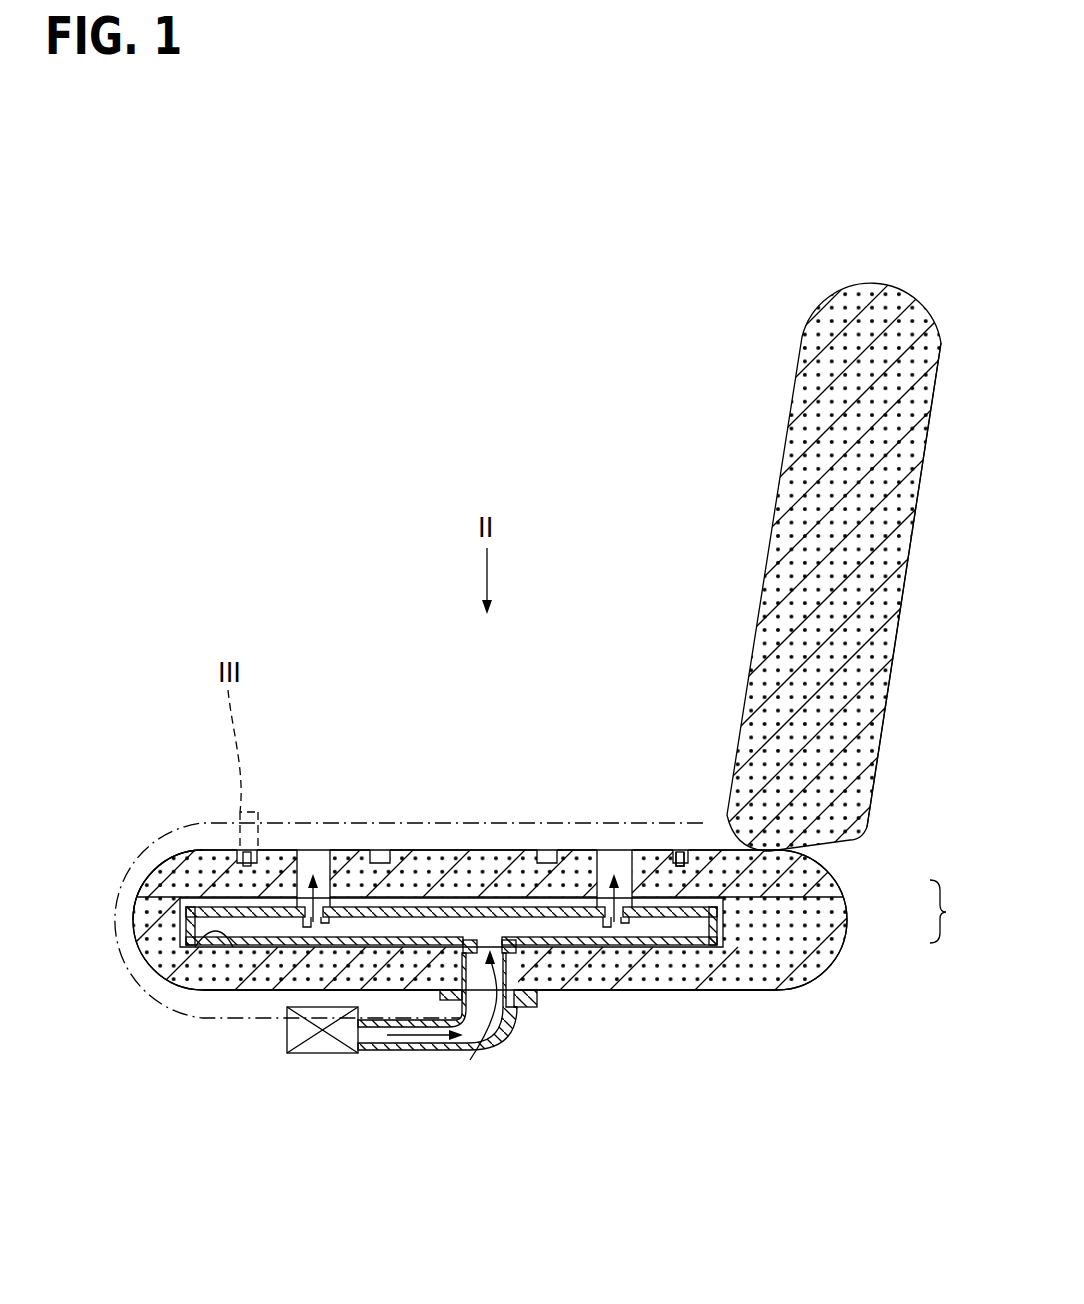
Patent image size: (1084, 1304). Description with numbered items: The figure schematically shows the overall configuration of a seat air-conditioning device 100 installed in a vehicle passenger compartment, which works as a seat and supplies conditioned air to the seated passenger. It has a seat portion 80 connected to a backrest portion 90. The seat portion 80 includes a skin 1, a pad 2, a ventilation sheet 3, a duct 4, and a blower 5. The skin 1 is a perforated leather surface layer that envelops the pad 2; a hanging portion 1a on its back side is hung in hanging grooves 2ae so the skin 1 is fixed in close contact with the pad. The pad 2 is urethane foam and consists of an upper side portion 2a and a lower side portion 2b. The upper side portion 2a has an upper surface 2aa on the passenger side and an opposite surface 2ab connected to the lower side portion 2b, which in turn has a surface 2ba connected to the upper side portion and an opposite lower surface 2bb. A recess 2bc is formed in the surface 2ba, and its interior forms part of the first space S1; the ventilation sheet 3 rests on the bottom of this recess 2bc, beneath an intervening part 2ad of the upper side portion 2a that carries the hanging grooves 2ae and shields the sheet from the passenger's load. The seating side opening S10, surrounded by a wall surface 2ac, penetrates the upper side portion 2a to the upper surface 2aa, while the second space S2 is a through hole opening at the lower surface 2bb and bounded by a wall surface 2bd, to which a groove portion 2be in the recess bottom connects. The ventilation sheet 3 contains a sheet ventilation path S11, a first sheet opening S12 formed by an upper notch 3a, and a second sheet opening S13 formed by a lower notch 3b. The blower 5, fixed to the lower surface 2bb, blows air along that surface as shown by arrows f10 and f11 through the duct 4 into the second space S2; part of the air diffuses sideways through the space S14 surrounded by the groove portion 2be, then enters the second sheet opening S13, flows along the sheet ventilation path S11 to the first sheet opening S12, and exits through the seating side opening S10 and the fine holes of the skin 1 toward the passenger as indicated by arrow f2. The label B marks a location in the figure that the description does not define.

The seat air-conditioning device 100 is at (888, 268).
The backrest portion 90 is at (906, 577).
The seat portion 80 is at (695, 996).
The skin 1 is at (140, 852).
The hanging portion 1a is at (680, 850).
The pad 2 is at (548, 920).
The upper side portion 2a is at (845, 888).
The upper surface 2aa is at (180, 865).
The surface 2ab is at (835, 952).
The wall surface 2ac is at (323, 867).
The intervening part 2ad is at (352, 903).
The hanging groove 2ae is at (240, 850).
The lower side portion 2b is at (845, 920).
The surface 2ba is at (815, 876).
The surface 2bb is at (758, 992).
The recess 2bc is at (233, 947).
The wall surface 2bd is at (518, 1040).
The groove portion 2be is at (468, 940).
The ventilation sheet 3 is at (198, 905).
The notch 3a is at (268, 868).
The notch 3b is at (527, 1004).
The duct 4 is at (440, 1050).
The blower 5 is at (322, 1053).
The boundary B is at (605, 870).
The first space S1 is at (342, 927).
The second space S2 is at (473, 968).
The seating side opening S10 is at (312, 880).
The sheet ventilation path S11 is at (337, 1053).
The first sheet opening S12 is at (300, 950).
The second sheet opening S13 is at (485, 937).
The space S14 is at (465, 950).
The arrow f2 is at (305, 870).
The arrow f10 is at (412, 1050).
The arrow f11 is at (472, 1060).